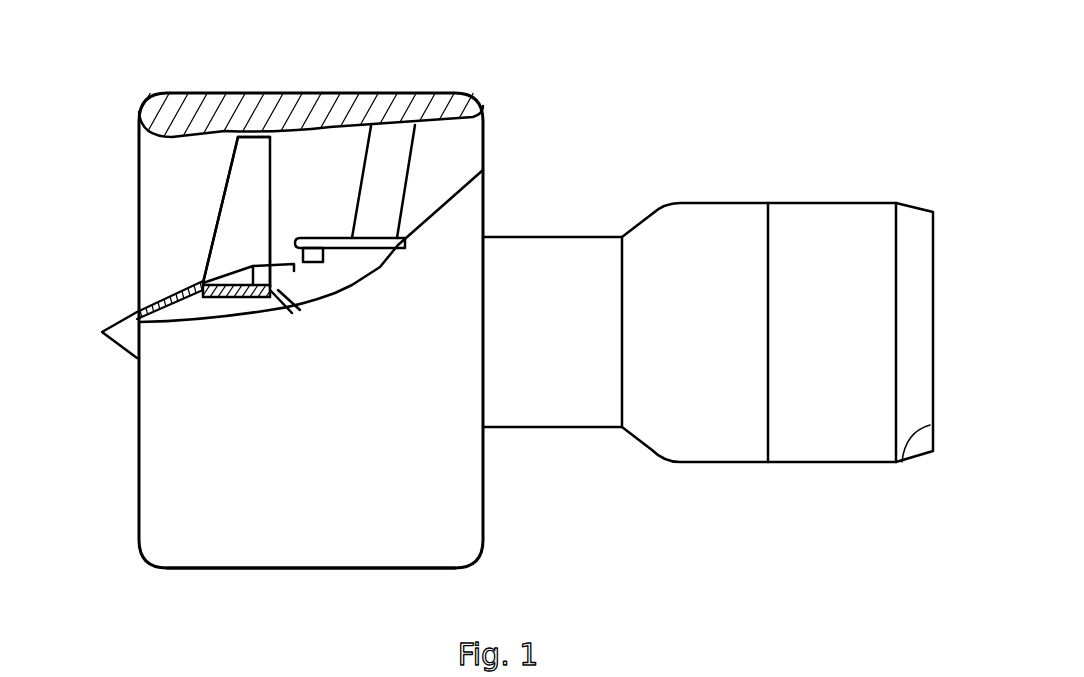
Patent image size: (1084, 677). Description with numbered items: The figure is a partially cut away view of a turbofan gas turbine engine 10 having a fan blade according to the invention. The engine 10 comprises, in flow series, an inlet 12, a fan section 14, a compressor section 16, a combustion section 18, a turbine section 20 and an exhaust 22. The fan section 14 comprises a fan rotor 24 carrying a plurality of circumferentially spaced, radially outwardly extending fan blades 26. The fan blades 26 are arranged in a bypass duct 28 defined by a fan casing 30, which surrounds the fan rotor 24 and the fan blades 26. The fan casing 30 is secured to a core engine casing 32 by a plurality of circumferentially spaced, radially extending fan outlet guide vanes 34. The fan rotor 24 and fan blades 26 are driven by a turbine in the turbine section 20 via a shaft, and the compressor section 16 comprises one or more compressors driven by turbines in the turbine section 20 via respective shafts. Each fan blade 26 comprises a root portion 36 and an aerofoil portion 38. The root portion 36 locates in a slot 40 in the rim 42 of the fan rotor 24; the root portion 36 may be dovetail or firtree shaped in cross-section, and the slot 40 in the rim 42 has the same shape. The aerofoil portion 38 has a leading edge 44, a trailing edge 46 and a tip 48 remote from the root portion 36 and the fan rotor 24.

The turbofan gas turbine engine 10 is at (597, 127).
The inlet 12 is at (139, 238).
The fan section 14 is at (317, 569).
The compressor section 16 is at (550, 418).
The combustion section 18 is at (718, 446).
The turbine section 20 is at (842, 447).
The exhaust 22 is at (910, 438).
The fan rotor 24 is at (195, 322).
The fan blade 26 is at (228, 188).
The bypass duct 28 is at (368, 158).
The fan casing 30 is at (352, 92).
The core engine casing 32 is at (382, 249).
The fan outlet guide vane 34 is at (405, 178).
The root portion 36 is at (230, 270).
The aerofoil portion 38 is at (232, 170).
The slot 40 is at (215, 298).
The rim 42 is at (258, 297).
The leading edge 44 is at (220, 215).
The trailing edge 46 is at (270, 227).
The tip 48 is at (252, 137).